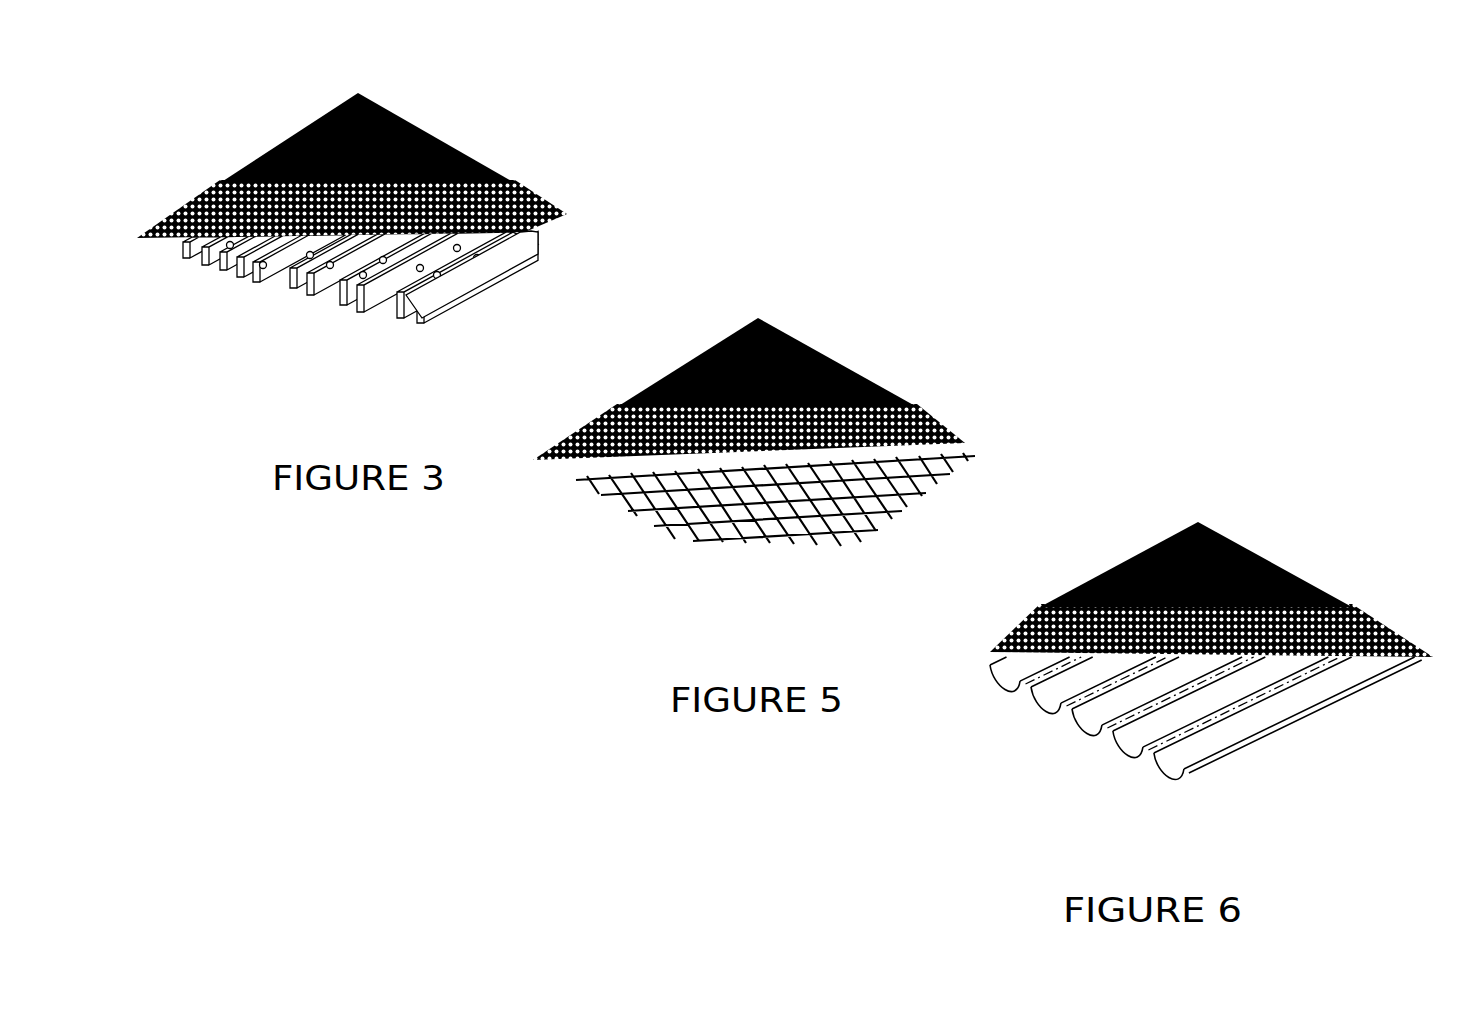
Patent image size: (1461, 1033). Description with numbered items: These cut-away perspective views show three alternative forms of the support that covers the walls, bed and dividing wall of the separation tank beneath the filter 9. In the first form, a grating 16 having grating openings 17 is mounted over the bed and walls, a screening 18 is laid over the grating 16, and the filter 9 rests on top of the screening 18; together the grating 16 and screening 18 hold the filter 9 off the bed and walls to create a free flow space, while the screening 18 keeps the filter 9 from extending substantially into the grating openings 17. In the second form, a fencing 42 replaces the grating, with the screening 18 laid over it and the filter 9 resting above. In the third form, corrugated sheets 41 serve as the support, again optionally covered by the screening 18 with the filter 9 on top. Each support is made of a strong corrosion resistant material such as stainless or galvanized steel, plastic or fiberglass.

In FIG. 3, the filter 9 is at (373, 103).
In FIG. 5, the filter 9 is at (778, 328).
In FIG. 6, the filter 9 is at (1217, 530).
In FIG. 3, the screening 18 is at (485, 168).
In FIG. 5, the screening 18 is at (883, 397).
In FIG. 6, the screening 18 is at (1330, 598).
In FIG. 3, the grating 16 is at (400, 278).
In FIG. 3, the grating openings 17 is at (460, 258).
In FIG. 5, the fencing 42 is at (873, 515).
In FIG. 6, the corrugated sheets 41 is at (1233, 735).